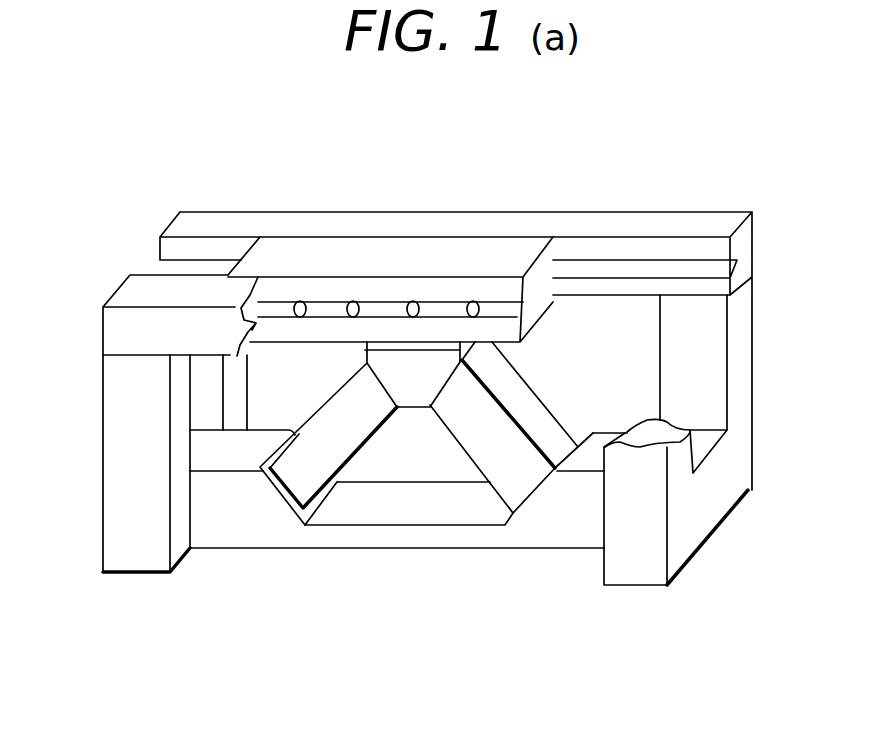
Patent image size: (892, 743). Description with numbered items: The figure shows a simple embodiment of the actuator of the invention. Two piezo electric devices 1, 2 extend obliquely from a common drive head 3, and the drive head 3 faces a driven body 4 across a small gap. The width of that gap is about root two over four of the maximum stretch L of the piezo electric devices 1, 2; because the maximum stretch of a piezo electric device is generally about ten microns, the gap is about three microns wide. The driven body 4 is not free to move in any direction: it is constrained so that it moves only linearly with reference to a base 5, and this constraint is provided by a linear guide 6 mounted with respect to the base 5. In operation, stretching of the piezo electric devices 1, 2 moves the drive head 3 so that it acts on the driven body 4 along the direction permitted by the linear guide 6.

The piezo electric device 1 is at (303, 475).
The piezo electric device 2 is at (518, 488).
The drive head 3 is at (423, 395).
The driven body 4 is at (292, 245).
The base 5 is at (733, 462).
The linear guide 6 is at (635, 222).